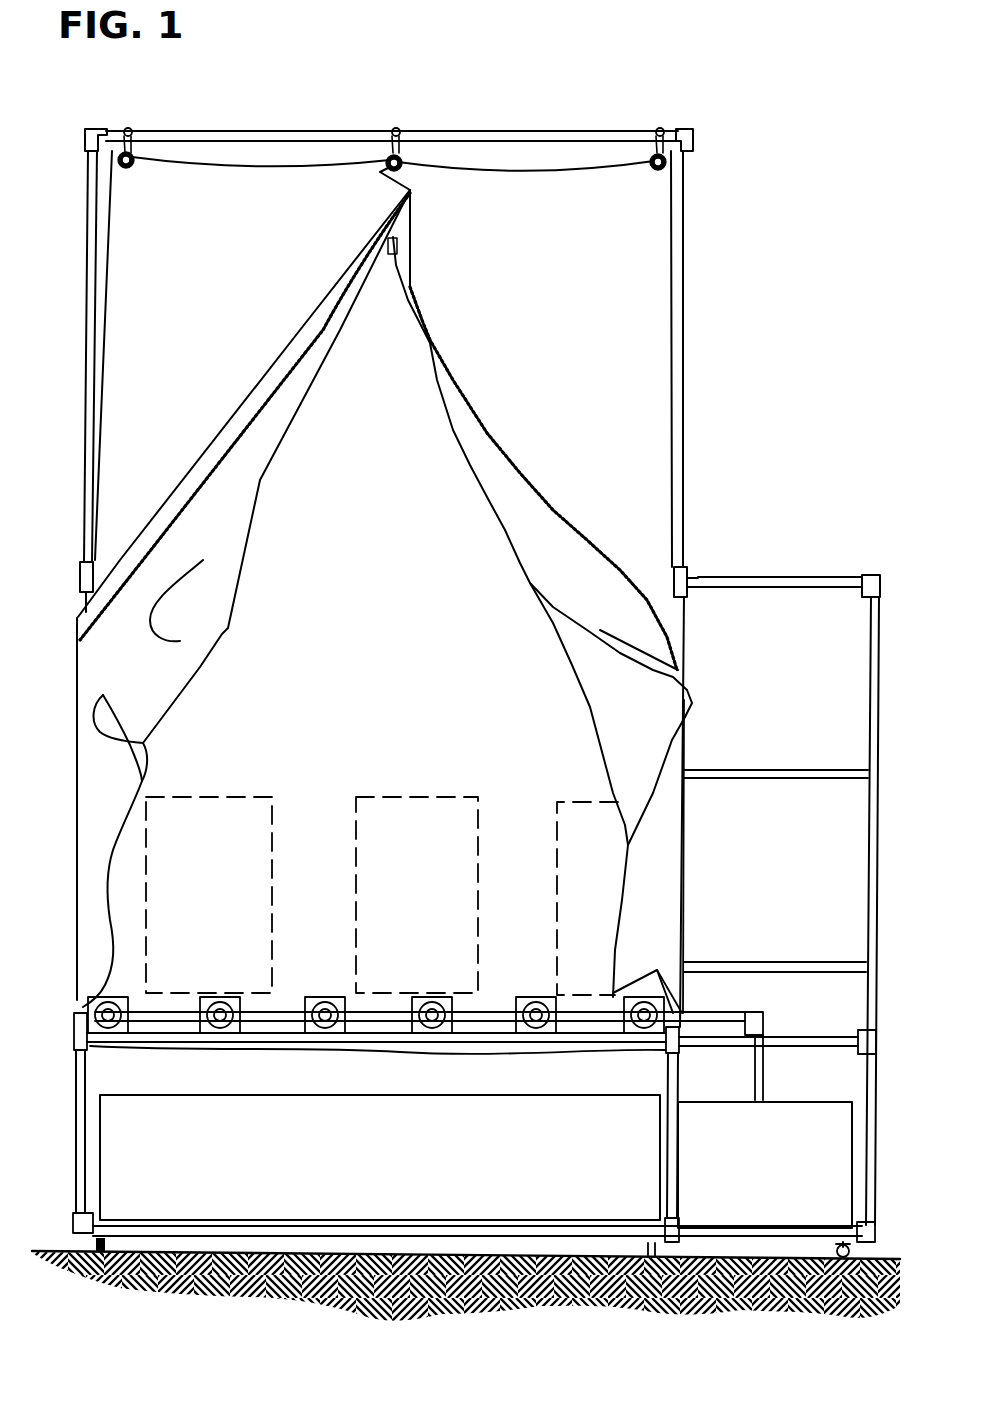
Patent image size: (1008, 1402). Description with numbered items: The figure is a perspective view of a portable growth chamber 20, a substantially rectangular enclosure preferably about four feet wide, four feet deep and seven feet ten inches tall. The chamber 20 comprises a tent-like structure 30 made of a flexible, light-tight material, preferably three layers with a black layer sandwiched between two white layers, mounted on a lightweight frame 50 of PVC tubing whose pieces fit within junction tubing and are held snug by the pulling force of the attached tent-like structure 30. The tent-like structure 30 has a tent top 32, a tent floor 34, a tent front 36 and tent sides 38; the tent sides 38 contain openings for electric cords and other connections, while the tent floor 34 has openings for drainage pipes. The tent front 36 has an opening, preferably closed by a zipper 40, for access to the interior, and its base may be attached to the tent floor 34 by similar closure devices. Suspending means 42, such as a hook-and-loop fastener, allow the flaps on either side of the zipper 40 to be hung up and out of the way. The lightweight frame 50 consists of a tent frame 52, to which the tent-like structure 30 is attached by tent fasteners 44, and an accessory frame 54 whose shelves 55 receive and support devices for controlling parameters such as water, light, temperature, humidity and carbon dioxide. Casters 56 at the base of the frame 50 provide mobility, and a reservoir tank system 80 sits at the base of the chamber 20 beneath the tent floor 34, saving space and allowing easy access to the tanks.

The growth chamber 20 is at (558, 105).
The tent-like structure 30 is at (640, 220).
The tent top 32 is at (608, 132).
The tent floor 34 is at (497, 1050).
The tent front 36 is at (133, 293).
The tent sides 38 is at (678, 356).
The zipper 40 is at (390, 255).
The suspending means 42 is at (323, 315).
The tent fasteners 44 is at (413, 131).
The lightweight frame 50 is at (302, 130).
The tent frame 52 is at (88, 432).
The accessory frame 54 is at (817, 573).
The shelves 55 is at (785, 770).
The casters 56 is at (835, 1256).
The reservoir tank system 80 is at (387, 1098).